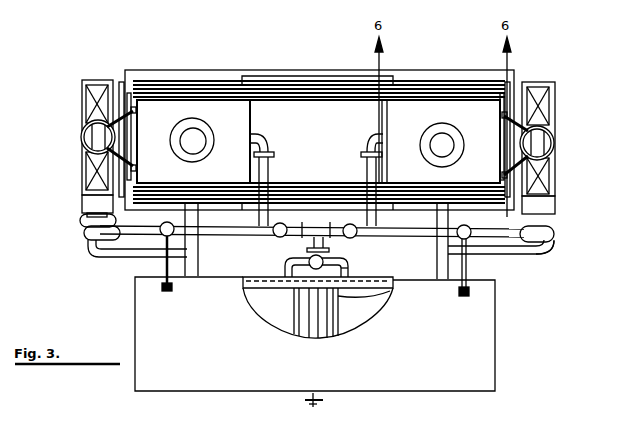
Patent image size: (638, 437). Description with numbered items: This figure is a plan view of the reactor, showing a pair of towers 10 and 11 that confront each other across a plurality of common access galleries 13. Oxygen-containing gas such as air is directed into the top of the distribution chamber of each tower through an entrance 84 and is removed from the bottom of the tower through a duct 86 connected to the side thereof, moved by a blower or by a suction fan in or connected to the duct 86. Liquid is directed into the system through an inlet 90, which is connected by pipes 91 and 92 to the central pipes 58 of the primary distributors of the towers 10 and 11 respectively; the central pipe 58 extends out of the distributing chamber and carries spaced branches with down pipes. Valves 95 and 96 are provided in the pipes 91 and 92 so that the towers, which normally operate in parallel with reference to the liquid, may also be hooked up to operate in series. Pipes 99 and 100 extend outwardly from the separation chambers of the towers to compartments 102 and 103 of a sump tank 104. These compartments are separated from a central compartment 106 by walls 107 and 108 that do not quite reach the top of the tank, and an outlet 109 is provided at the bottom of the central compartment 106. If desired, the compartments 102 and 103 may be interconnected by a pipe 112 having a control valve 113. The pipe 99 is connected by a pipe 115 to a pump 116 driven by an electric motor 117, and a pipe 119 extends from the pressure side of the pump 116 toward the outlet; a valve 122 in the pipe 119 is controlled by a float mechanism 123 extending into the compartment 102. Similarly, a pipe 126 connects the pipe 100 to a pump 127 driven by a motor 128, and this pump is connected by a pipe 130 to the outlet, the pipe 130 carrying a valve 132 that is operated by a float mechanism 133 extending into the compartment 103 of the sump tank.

The tower 10 is at (201, 95).
The tower 11 is at (424, 97).
The common access galleries 13 is at (300, 104).
The entrance 84 is at (184, 128).
The duct 86 is at (84, 136).
The central pipe 58 is at (270, 139).
The pipe 91 is at (269, 171).
The pipe 92 is at (366, 170).
The valve 132 is at (466, 223).
The electric motor 117 is at (82, 203).
The pipe 119 is at (80, 222).
The pump 116 is at (85, 234).
The valve 122 is at (157, 236).
The pipe 115 is at (129, 252).
The float mechanism 123 is at (162, 279).
The pipe 99 is at (207, 239).
The valve 95 is at (276, 236).
The control valve 113 is at (286, 259).
The inlet 90 is at (325, 249).
The valve 96 is at (360, 240).
The pipe 112 is at (349, 264).
The pipe 100 is at (436, 251).
The compartment 102 is at (262, 311).
The wall 107 is at (295, 330).
The wall 108 is at (340, 297).
The compartment 103 is at (360, 314).
The central compartment 106 is at (326, 336).
The sump tank 104 is at (497, 373).
The outlet 109 is at (313, 404).
The motor 128 is at (556, 213).
The pump 127 is at (553, 236).
The pipe 126 is at (546, 252).
The pipe 130 is at (510, 246).
The float mechanism 133 is at (468, 270).